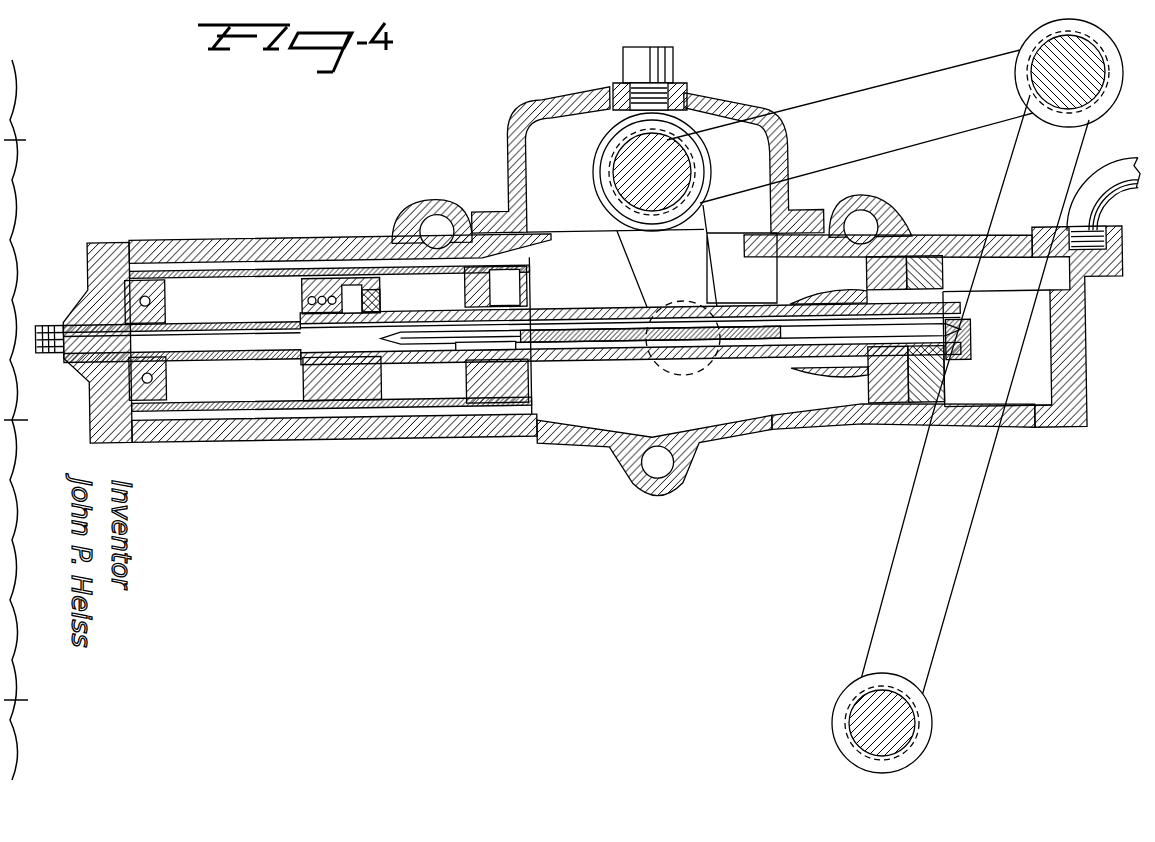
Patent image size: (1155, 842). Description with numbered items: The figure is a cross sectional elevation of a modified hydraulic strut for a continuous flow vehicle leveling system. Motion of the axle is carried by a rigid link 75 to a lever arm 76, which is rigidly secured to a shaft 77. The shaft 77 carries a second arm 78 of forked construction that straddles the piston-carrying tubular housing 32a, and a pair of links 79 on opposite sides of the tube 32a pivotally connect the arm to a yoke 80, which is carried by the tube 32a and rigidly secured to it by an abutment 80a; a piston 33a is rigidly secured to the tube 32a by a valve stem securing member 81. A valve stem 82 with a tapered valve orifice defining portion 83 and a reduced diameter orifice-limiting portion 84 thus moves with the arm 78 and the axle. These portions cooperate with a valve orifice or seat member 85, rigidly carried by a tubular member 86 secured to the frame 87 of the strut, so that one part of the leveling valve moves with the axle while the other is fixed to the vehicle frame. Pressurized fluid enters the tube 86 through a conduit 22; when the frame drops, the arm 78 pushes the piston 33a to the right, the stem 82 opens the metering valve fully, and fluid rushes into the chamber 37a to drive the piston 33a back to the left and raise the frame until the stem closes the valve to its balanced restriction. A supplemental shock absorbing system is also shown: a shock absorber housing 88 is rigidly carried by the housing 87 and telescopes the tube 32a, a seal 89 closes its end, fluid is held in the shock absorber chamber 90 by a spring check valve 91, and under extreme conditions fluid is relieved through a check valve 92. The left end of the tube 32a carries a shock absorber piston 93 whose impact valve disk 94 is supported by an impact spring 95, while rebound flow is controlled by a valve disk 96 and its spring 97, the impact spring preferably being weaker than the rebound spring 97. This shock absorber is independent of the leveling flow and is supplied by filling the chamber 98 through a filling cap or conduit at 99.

The conduit 22 is at (53, 326).
The frame of the strut unit 87 is at (98, 312).
The shock absorber housing 88 is at (236, 266).
The shock absorber chamber 90 is at (212, 290).
The spring check valve 91 is at (150, 282).
The check valve 92 is at (166, 382).
The shock absorber piston 93 is at (330, 280).
The impact valve disk 94 is at (308, 300).
The impact spring 95 is at (305, 380).
The valve disk 96 is at (360, 285).
The rebound spring 97 is at (380, 300).
The reduced diameter orifice-limiting portion 84 is at (413, 340).
The tubular member 86 is at (262, 326).
The valve orifice or seat member 85 is at (472, 354).
The seal 89 is at (527, 290).
The chamber 98 is at (535, 293).
The tapered valve orifice defining portion 83 is at (558, 356).
The valve stem 82 is at (590, 325).
The second arm 78 is at (645, 262).
The links 79 is at (722, 366).
The piston-carrying tubular housing 32a is at (632, 372).
The abutment 80a is at (770, 370).
The yoke 80 is at (835, 376).
The valve stem securing member 81 is at (968, 345).
The chamber 37a is at (1005, 398).
The piston 33a is at (868, 450).
The shaft 77 is at (638, 172).
The filling cap or conduit 99 is at (630, 88).
The lever arm 76 is at (882, 103).
The rigid link 75 is at (942, 455).